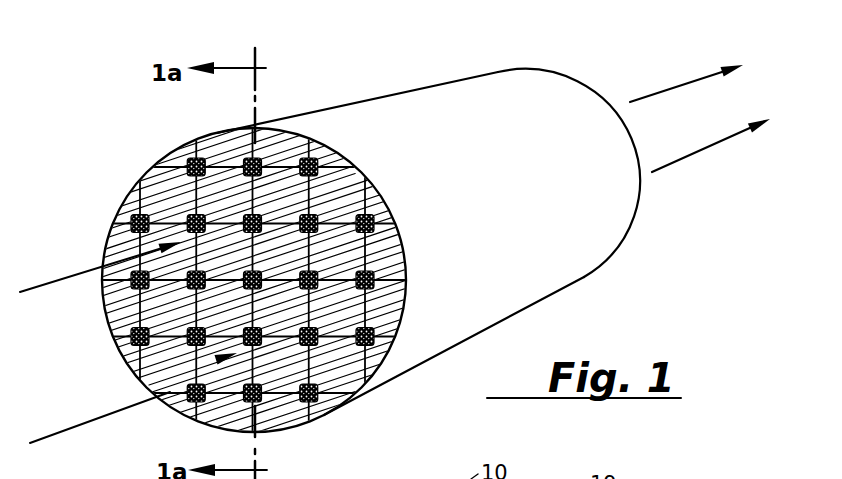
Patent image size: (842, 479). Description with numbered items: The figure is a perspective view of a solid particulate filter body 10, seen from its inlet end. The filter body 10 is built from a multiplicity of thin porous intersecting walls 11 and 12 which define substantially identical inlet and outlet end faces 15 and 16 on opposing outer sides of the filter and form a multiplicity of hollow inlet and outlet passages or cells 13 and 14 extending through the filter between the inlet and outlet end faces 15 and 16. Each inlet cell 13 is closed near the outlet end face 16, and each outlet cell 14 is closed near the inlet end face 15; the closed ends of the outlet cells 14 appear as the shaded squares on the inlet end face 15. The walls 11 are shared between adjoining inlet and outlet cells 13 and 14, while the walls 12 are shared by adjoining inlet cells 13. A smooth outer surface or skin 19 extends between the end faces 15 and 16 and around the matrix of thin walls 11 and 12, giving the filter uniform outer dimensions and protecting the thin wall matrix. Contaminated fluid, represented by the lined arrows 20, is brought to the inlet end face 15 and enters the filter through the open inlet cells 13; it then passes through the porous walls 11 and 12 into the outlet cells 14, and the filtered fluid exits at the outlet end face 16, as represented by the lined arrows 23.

The filter body 10 is at (444, 82).
The thin porous walls 11 is at (357, 198).
The thin porous walls 12 is at (400, 255).
The inlet passages or cells 13 is at (343, 350).
The outlet passages or cells 14 is at (190, 398).
The inlet end face 15 is at (138, 206).
The outlet end face 16 is at (630, 236).
The smooth outer surface or skin 19 is at (565, 224).
The contaminated fluid (lined arrows) 20 is at (55, 280).
The filtered fluid exit flow (lined arrows) 23 is at (673, 92).